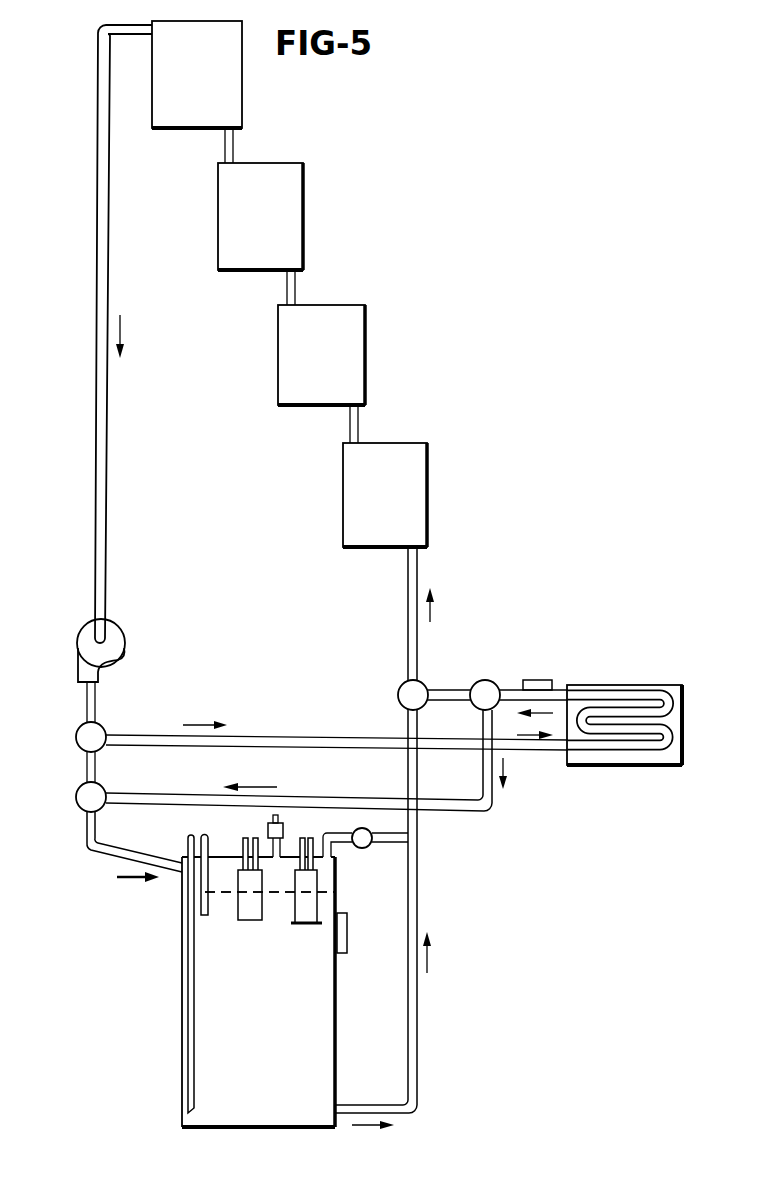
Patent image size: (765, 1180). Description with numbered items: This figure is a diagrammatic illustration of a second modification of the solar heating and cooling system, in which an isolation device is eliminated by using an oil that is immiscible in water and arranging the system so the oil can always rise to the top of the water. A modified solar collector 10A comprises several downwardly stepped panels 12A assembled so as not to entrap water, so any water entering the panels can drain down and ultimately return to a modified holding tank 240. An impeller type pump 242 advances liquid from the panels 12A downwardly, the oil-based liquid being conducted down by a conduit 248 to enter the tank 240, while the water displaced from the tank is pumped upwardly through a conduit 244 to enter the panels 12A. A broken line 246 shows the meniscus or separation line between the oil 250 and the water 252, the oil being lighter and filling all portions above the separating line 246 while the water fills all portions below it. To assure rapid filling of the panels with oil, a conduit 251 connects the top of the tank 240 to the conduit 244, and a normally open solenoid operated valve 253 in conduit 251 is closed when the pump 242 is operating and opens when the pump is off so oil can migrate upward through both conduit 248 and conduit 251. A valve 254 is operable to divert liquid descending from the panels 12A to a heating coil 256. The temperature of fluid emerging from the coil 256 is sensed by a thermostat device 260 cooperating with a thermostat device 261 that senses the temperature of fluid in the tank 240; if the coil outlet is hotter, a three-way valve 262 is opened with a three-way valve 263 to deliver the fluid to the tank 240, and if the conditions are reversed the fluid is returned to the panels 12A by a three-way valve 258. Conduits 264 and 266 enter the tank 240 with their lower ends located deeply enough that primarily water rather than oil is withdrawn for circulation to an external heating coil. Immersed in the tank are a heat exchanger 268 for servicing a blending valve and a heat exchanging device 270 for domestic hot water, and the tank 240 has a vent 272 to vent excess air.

The modified solar collector 10A is at (361, 273).
The downwardly stepped panels 12A is at (278, 163).
The holding tank 240 is at (182, 1103).
The impeller type pump 242 is at (124, 647).
The conduit 244 is at (418, 866).
The separation line 246 is at (332, 890).
The conduit 248 is at (108, 416).
The oil 250 is at (226, 860).
The conduit 251 is at (392, 830).
The water 252 is at (203, 1023).
The solenoid operated valve 253 is at (362, 828).
The valve 254 is at (77, 731).
The heating coil 256 is at (650, 689).
The 3-way valve 258 is at (403, 684).
The thermostat device 260 is at (543, 680).
The thermostat device 261 is at (348, 922).
The 3-way valve 262 is at (488, 665).
The 3-way valve 263 is at (77, 793).
The conduit 264 is at (200, 902).
The conduit 266 is at (188, 940).
The heat exchanger 268 is at (250, 917).
The heat exchanging device 270 is at (307, 925).
The vent 272 is at (284, 829).